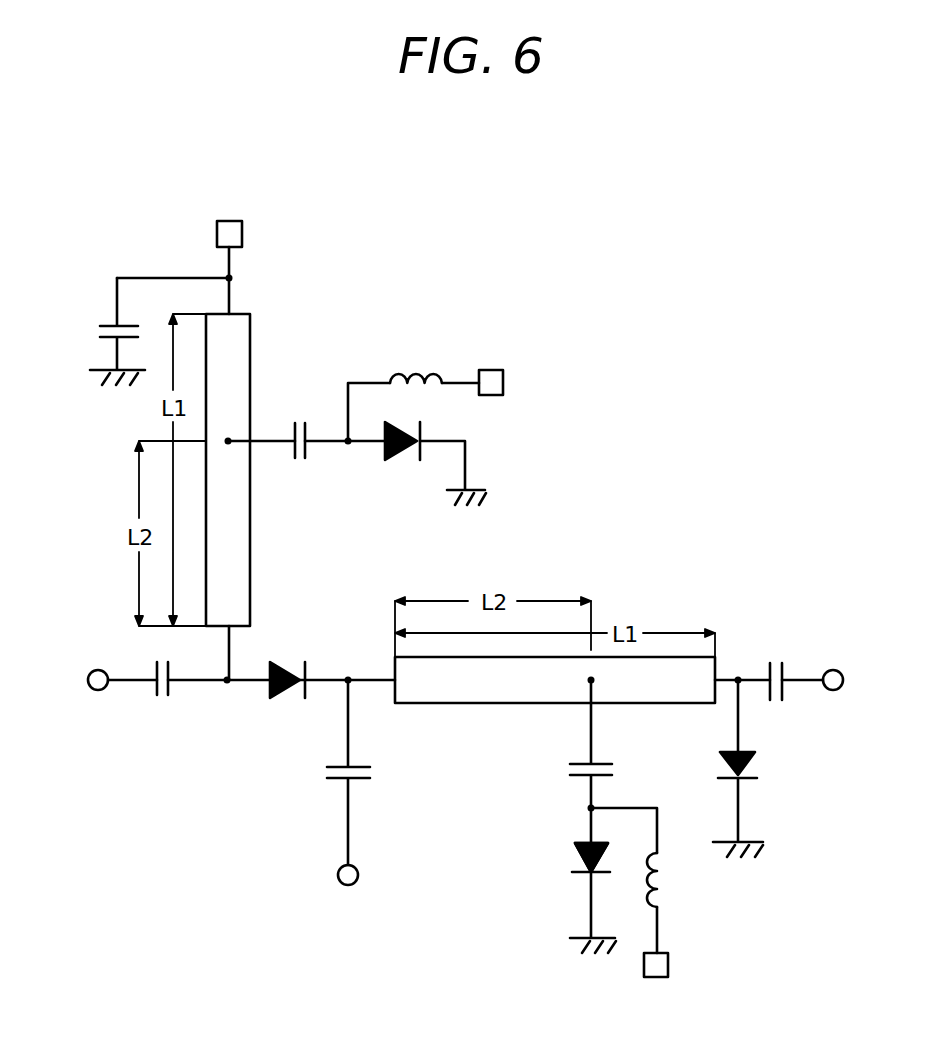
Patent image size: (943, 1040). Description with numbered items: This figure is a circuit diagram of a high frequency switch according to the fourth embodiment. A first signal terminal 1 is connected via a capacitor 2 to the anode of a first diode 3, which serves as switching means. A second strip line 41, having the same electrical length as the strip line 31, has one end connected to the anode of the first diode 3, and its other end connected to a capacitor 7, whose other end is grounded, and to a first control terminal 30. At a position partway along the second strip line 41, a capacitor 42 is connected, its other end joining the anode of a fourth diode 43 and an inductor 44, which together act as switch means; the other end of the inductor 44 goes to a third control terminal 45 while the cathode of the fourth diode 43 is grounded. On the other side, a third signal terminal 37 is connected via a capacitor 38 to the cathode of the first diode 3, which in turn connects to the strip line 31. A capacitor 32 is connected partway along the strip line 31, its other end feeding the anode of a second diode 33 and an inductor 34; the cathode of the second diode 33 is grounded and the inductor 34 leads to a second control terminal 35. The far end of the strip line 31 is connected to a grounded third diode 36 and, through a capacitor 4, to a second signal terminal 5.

The first signal terminal 1 is at (98, 691).
The capacitor 2 is at (160, 697).
The first diode 3 is at (290, 662).
The capacitor 4 is at (772, 660).
The second signal terminal 5 is at (833, 670).
The capacitor 7 is at (110, 326).
The first control terminal 30 is at (243, 232).
The strip line 31 is at (495, 703).
The capacitor 32 is at (570, 770).
The second diode 33 is at (577, 855).
The inductor 34 is at (665, 885).
The second control terminal 35 is at (668, 965).
The third diode 36 is at (755, 763).
The third signal terminal 37 is at (340, 882).
The capacitor 38 is at (327, 772).
The second strip line 41 is at (250, 577).
The capacitor 42 is at (300, 420).
The fourth diode 43 is at (405, 455).
The inductor 44 is at (425, 371).
The third control terminal 45 is at (503, 385).